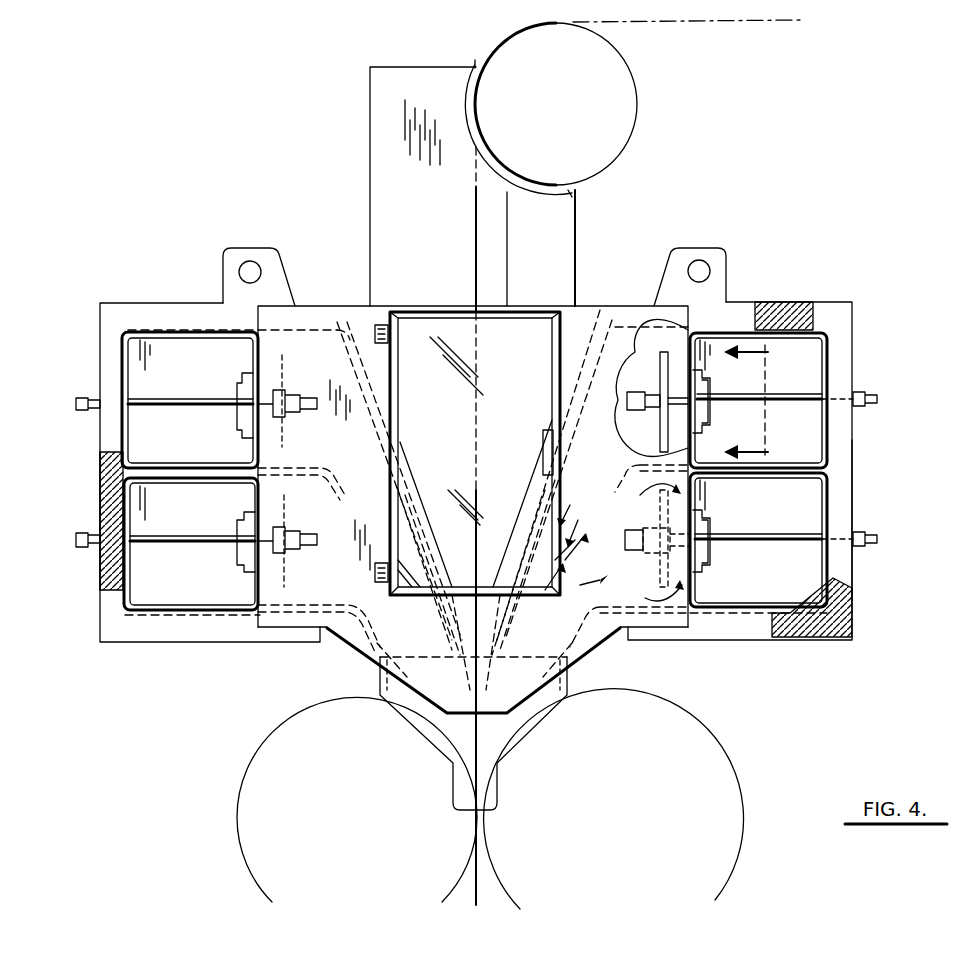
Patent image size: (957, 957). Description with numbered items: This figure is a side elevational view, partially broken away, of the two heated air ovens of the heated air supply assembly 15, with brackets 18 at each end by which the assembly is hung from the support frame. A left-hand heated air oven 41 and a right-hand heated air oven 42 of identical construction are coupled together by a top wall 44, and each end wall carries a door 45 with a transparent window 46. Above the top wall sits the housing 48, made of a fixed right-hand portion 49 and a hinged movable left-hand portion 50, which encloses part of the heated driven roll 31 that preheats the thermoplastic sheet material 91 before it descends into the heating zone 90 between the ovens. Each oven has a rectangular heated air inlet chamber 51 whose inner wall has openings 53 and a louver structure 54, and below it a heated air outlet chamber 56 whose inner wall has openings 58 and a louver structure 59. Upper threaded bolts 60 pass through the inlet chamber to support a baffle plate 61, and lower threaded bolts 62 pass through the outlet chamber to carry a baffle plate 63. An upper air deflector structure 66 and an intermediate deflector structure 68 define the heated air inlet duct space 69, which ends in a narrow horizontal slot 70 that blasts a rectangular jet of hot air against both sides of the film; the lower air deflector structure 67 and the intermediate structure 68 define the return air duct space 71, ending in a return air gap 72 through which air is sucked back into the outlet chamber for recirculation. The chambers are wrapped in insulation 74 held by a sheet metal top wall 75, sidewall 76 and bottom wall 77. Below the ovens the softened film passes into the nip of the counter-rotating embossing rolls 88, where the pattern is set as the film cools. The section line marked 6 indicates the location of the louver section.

The heated air supply assembly 15 is at (334, 244).
The brackets 18 is at (247, 258).
The driven roll 31 is at (636, 97).
The left-hand heated air oven 41 is at (66, 330).
The right-hand heated air oven 42 is at (875, 335).
The top wall 44 is at (597, 312).
The door 45 is at (376, 326).
The transparent window 46 is at (510, 330).
The housing 48 is at (344, 108).
The fixed right-hand portion 49 is at (556, 245).
The movable left-hand portion 50 is at (437, 245).
The heated air inlet chamber 51 is at (170, 345).
The openings 53 is at (712, 428).
The louver structure 54 is at (238, 428).
The heated air outlet chamber 56 is at (805, 605).
The openings 58 is at (712, 548).
The louver structure 59 is at (240, 570).
The upper threaded bolts 60 is at (190, 404).
The baffle plate 61 is at (645, 345).
The lower threaded bolts 62 is at (148, 540).
The baffle plate 63 is at (660, 512).
The upper air deflector structure 66 is at (340, 352).
The lower air deflector structure 67 is at (372, 612).
The intermediate deflector structure 68 is at (330, 470).
The heated air inlet duct space 69 is at (351, 417).
The slot 70 is at (476, 585).
The return air duct space 71 is at (351, 579).
The return air gap 72 is at (382, 680).
The insulation 74 is at (790, 302).
The top wall 75 is at (170, 302).
The sidewall 76 is at (100, 568).
The bottom wall 77 is at (188, 643).
The embossing rolls 88 is at (730, 768).
The heating zone 90 is at (452, 419).
The thermoplastic flexible sheet material 91 is at (478, 423).
The section line 6- 6 is at (736, 403).